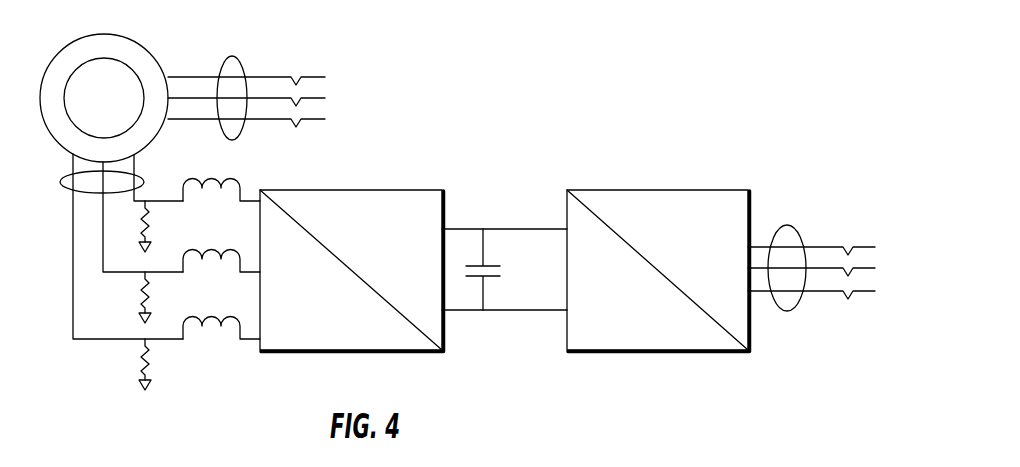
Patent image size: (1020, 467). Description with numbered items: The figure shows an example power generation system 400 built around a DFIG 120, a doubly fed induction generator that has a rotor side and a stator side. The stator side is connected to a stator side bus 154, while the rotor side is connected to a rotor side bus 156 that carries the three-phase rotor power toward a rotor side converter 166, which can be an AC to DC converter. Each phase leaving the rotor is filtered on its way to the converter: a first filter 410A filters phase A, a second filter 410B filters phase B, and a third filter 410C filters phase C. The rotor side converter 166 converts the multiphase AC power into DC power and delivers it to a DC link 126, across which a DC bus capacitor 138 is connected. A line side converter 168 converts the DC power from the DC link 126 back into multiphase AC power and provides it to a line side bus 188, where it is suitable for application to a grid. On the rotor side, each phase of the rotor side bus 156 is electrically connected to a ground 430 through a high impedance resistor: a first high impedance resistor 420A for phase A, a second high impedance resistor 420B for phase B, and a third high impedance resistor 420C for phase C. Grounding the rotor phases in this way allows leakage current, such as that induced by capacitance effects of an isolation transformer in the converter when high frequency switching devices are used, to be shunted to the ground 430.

The power generation system 400 is at (537, 83).
The DFIG 120 is at (113, 34).
The stator side bus 154 is at (235, 58).
The rotor side bus 156 is at (60, 182).
The first filter 410A is at (233, 180).
The second filter 410B is at (205, 249).
The third filter 410C is at (205, 315).
The first high impedance resistor 420A is at (151, 212).
The second high impedance resistor 420B is at (151, 283).
The third high impedance resistor 420C is at (151, 350).
The ground 430 is at (121, 295).
The rotor side converter 166 is at (378, 189).
The line side converter 168 is at (685, 189).
The DC link 126 is at (497, 312).
The DC bus capacitor 138 is at (491, 266).
The line side bus 188 is at (787, 311).